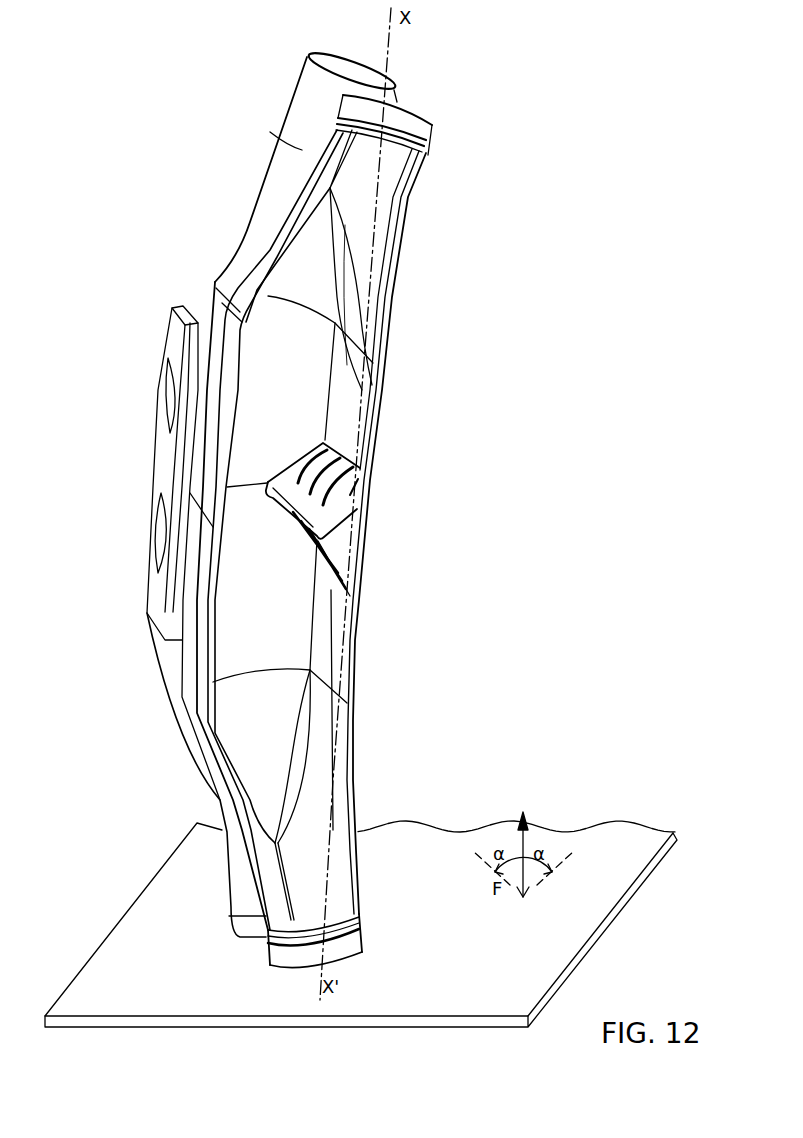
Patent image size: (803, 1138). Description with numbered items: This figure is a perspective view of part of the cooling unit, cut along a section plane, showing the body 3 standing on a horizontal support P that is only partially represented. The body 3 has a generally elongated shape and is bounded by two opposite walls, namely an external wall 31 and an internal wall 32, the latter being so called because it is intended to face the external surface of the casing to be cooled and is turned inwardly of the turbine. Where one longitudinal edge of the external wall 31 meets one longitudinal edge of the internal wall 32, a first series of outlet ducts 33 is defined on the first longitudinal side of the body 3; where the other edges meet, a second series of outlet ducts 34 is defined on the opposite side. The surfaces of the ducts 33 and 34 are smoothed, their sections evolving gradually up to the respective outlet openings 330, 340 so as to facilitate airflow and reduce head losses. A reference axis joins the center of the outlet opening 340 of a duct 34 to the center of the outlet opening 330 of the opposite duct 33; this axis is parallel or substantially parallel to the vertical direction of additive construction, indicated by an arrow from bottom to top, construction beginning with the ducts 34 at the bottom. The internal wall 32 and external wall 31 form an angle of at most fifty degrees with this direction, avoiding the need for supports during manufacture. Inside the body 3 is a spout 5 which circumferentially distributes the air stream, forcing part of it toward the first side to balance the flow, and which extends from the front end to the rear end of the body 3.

The body 3 is at (126, 798).
The spout 5 is at (340, 507).
The external wall 31 is at (218, 310).
The internal wall 32 is at (390, 415).
The outlet duct 33 is at (302, 150).
The outlet duct 34 is at (230, 882).
The outlet opening 330 is at (408, 125).
The outlet opening 340 is at (337, 942).
The horizontal support P is at (552, 946).